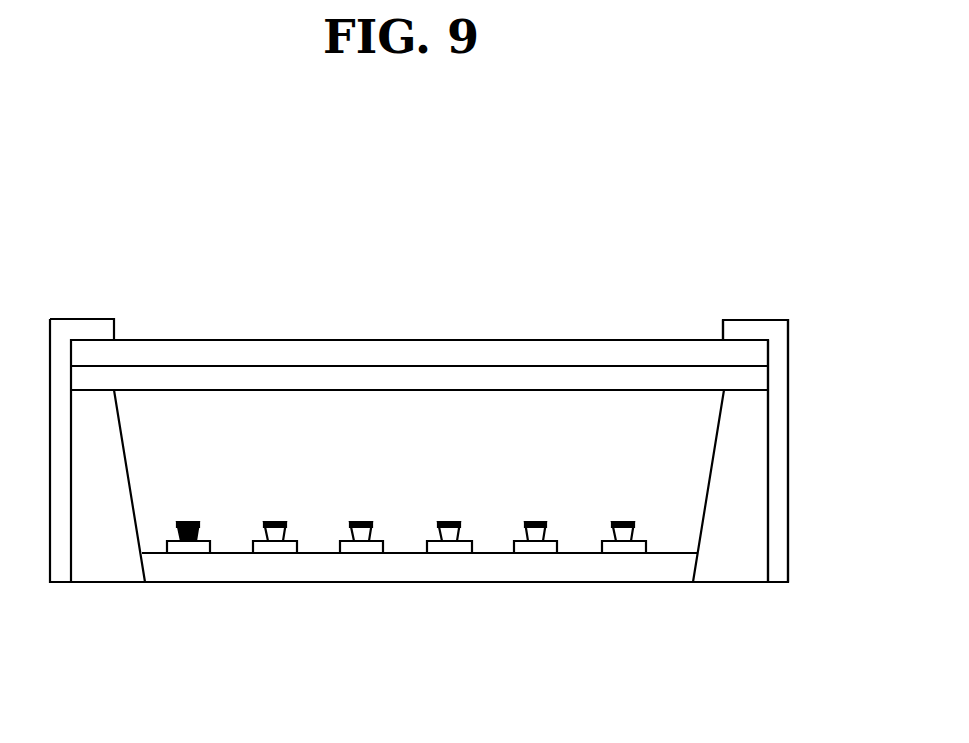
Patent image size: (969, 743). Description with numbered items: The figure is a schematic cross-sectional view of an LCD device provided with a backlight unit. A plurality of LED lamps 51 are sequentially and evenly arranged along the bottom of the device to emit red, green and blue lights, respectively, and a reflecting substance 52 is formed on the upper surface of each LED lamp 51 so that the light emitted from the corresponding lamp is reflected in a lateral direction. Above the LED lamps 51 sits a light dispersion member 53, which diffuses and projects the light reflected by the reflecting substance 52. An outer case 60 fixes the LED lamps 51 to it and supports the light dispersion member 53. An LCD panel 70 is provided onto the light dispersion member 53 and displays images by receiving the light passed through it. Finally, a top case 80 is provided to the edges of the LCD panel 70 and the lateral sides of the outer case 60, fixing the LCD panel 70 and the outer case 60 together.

The LED lamp 51 is at (622, 548).
The reflecting substance 52 is at (535, 537).
The light dispersion member 53 is at (755, 380).
The outer case 60 is at (747, 485).
The LCD panel 70 is at (682, 350).
The top case 80 is at (782, 347).